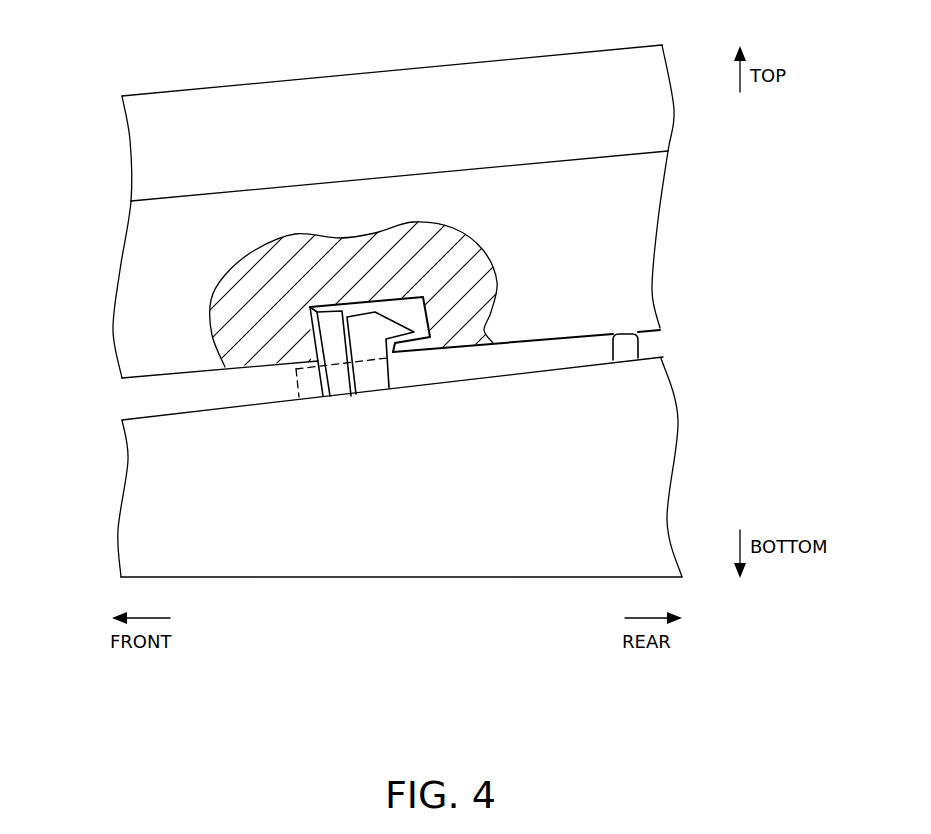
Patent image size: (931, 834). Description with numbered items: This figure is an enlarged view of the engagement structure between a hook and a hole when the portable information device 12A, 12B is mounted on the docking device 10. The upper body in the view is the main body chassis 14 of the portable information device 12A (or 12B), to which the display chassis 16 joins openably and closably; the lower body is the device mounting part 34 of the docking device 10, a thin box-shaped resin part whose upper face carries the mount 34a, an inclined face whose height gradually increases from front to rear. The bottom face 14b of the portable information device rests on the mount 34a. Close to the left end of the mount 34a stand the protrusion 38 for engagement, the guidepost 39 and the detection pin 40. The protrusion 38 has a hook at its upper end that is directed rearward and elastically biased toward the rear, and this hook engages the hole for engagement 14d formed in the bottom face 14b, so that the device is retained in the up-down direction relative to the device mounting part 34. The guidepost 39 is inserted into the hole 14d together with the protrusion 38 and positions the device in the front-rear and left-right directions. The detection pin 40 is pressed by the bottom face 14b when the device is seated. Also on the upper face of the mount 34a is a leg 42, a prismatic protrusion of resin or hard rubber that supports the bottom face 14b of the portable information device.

The docking device 10 is at (705, 453).
The portable information device 12A is at (706, 172).
The portable information device 12B is at (448, 217).
The main body chassis 14 is at (125, 297).
The bottom face 14b is at (655, 335).
The hole for engagement 14d is at (430, 314).
The display chassis 16 is at (129, 150).
The device mounting part 34 is at (121, 508).
The mount 34a is at (122, 422).
The protrusion for engagement 38 is at (360, 327).
The guidepost 39 is at (325, 320).
The detection pin 40 is at (408, 355).
The leg 42 is at (630, 352).